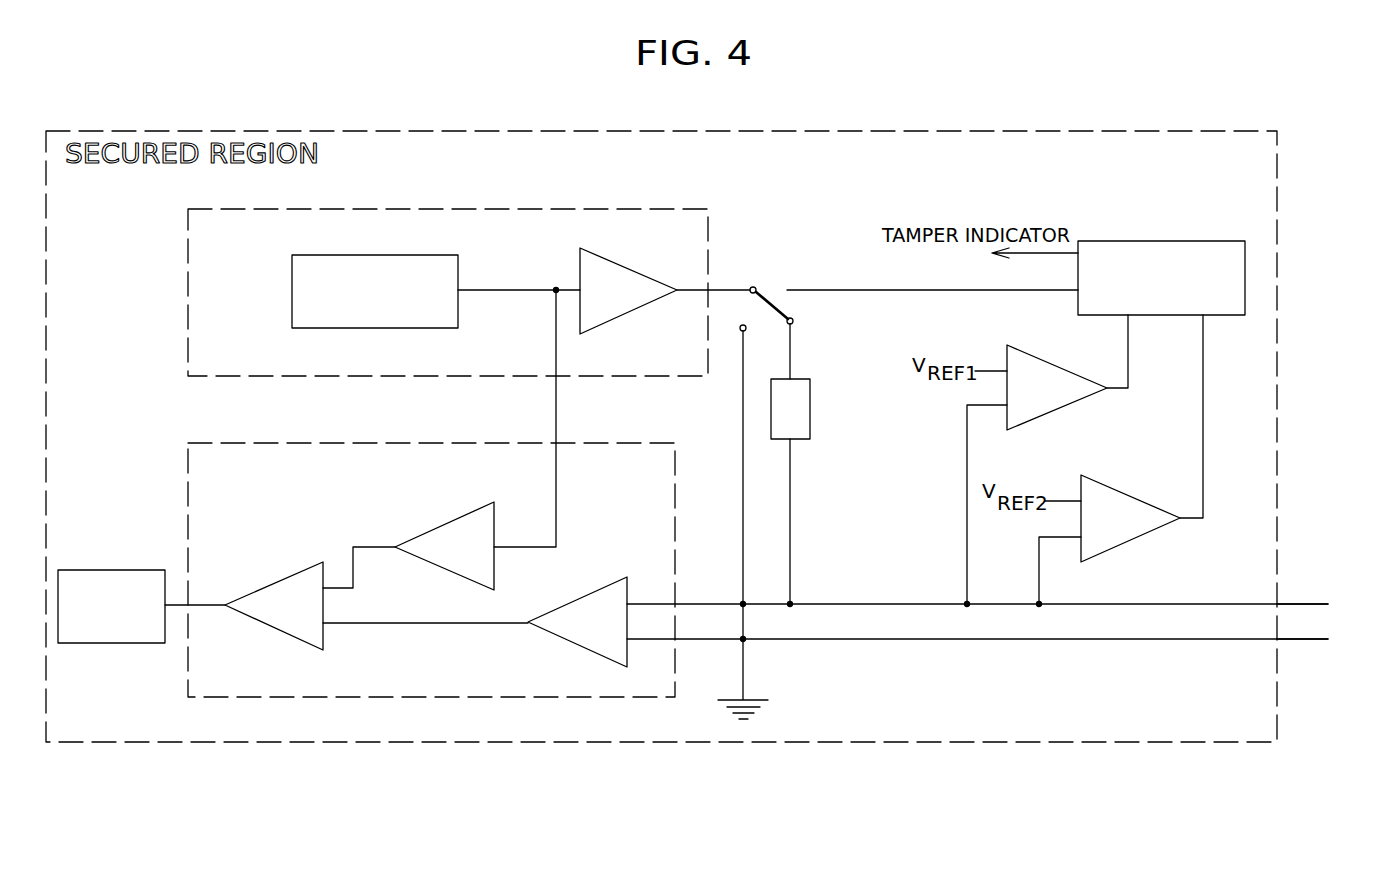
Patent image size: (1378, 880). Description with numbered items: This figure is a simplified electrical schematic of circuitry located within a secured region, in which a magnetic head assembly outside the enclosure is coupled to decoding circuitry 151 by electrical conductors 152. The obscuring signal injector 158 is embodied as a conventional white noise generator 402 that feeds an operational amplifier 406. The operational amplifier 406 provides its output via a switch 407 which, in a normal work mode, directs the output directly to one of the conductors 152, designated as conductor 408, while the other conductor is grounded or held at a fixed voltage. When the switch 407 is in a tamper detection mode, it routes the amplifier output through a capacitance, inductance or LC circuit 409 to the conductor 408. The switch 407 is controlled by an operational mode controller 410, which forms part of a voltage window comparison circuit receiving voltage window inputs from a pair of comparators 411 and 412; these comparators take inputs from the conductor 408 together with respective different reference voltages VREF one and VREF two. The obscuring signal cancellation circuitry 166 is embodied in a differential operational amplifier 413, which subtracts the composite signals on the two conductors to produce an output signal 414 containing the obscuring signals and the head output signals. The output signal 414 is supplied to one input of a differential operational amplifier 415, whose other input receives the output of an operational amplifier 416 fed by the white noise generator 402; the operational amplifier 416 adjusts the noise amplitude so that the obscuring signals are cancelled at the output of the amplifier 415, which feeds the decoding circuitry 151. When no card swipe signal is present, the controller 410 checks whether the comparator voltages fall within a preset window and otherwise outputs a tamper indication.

The decoding circuitry 151 is at (138, 570).
The electrical conductors 152 is at (1293, 604).
The obscuring signal injector 158 is at (586, 209).
The obscuring signal cancellation circuitry 166 is at (188, 480).
The white noise generator 402 is at (350, 255).
The operational amplifier 406 is at (622, 270).
The switch 407 is at (760, 290).
The conductor 408 is at (852, 604).
The capacitance, inductance or LC circuit 409 is at (810, 408).
The operational mode controller 410 is at (1144, 241).
The comparator 411 is at (1076, 402).
The comparator 412 is at (1112, 548).
The differential operational amplifier 413 is at (598, 594).
The output signal 414 is at (420, 623).
The differential operational amplifier 415 is at (280, 584).
The operational amplifier 416 is at (454, 512).